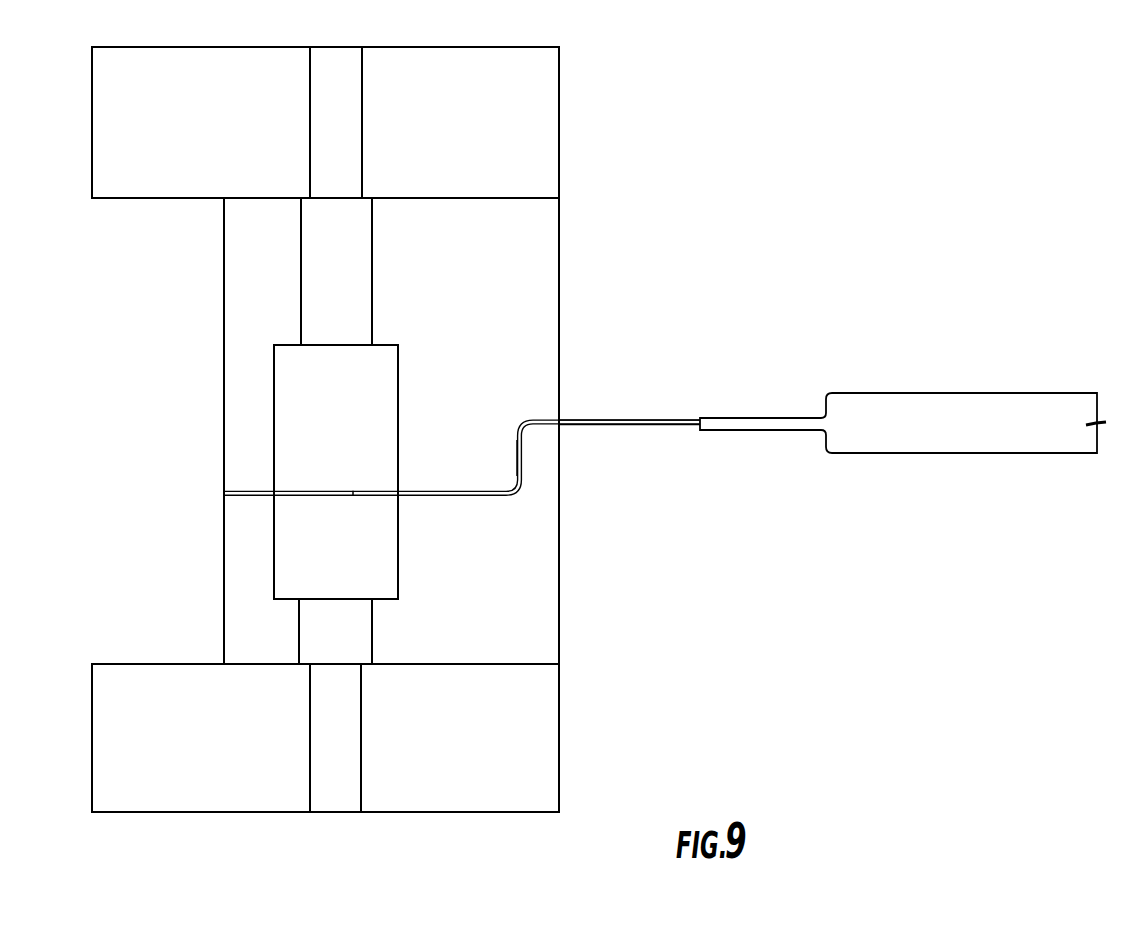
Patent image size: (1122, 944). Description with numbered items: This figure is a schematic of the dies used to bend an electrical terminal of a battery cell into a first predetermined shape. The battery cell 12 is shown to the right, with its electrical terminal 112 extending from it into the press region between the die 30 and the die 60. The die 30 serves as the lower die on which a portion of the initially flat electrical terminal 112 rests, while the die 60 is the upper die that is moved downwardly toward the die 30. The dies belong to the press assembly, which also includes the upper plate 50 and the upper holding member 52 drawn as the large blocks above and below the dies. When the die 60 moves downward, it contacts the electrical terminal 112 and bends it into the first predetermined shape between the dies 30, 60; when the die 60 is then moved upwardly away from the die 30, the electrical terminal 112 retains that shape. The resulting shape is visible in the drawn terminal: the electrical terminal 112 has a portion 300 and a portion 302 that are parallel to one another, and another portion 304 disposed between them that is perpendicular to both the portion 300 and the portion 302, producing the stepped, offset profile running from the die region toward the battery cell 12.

The battery cell 12 is at (910, 392).
The die 30 is at (545, 590).
The upper plate 50 is at (560, 732).
The upper holding member 52 is at (560, 148).
The die 60 is at (560, 295).
The electrical terminal 112 is at (638, 419).
The portion 300 is at (470, 490).
The portion 302 is at (603, 425).
The portion 304 is at (522, 450).